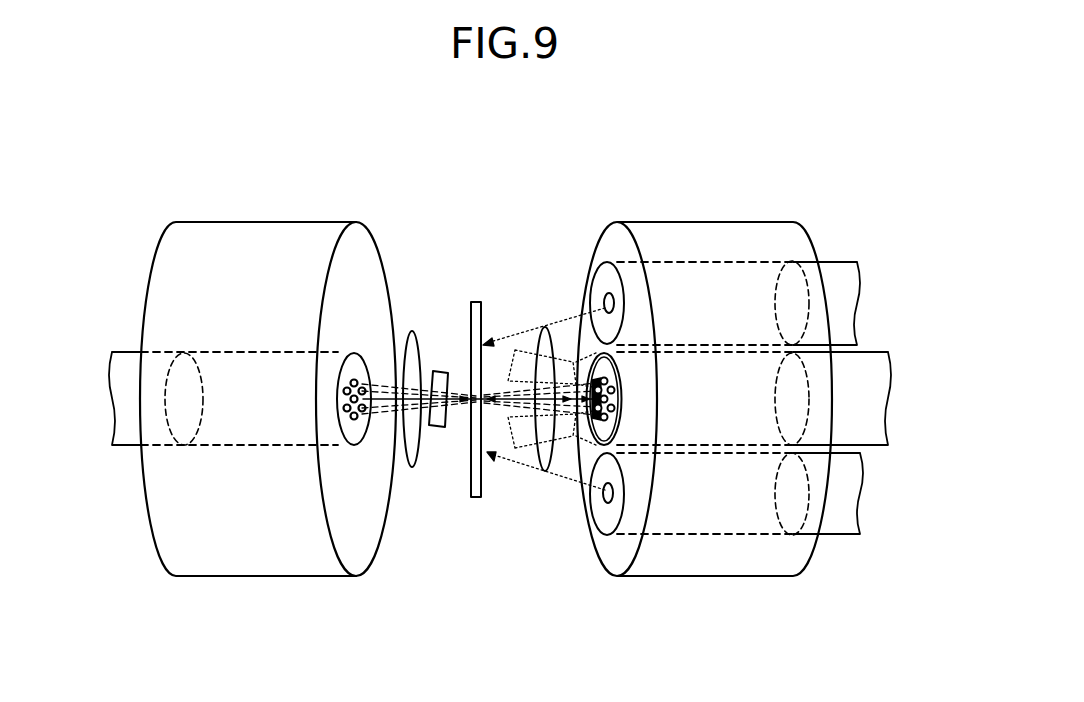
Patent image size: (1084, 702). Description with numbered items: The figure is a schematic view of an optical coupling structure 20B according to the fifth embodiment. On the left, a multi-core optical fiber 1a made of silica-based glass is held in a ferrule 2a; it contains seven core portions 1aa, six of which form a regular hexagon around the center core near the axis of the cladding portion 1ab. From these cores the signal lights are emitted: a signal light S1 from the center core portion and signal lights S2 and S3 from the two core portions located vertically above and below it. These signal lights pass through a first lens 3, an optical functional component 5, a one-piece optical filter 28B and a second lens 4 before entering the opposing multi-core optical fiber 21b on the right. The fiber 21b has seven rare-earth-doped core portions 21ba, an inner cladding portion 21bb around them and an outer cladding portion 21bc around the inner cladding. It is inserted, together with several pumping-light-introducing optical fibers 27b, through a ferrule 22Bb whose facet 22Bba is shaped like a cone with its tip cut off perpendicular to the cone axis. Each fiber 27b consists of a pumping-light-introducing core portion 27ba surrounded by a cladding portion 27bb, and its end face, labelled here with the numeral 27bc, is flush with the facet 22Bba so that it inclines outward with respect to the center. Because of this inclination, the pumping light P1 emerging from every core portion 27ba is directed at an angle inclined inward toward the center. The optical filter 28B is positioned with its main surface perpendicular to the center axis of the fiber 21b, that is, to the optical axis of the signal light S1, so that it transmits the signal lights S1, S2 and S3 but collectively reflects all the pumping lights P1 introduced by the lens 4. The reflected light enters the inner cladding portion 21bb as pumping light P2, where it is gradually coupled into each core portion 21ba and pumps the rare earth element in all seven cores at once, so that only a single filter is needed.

The multi-core optical fiber 1a is at (122, 346).
The core portions 1aa is at (356, 405).
The cladding portion 1ab is at (354, 445).
The ferrule 2a is at (262, 222).
The lens 3 is at (412, 331).
The signal light S1 is at (400, 447).
The signal light S2 is at (428, 382).
The signal light S3 is at (424, 440).
The optical functional component 5 is at (446, 371).
The optical filter 28B is at (476, 302).
The pumping light P2 is at (512, 348).
The pumping light P1 is at (574, 345).
The lens 4 is at (544, 327).
The optical coupling structure 20B is at (718, 393).
The ferrule 22Bb is at (704, 370).
The facet 22Bba is at (620, 248).
The pumping-light-introducing optical fiber 27b is at (860, 250).
The pumping-light-introducing core portion 27ba is at (612, 402).
The cladding portion 27bb is at (614, 283).
The hole edge 27bc is at (605, 250).
The multi-core optical fiber 21b is at (878, 340).
The core portions 21ba is at (655, 399).
The inner cladding portion 21bb is at (620, 399).
The outer cladding portion 21bc is at (619, 413).